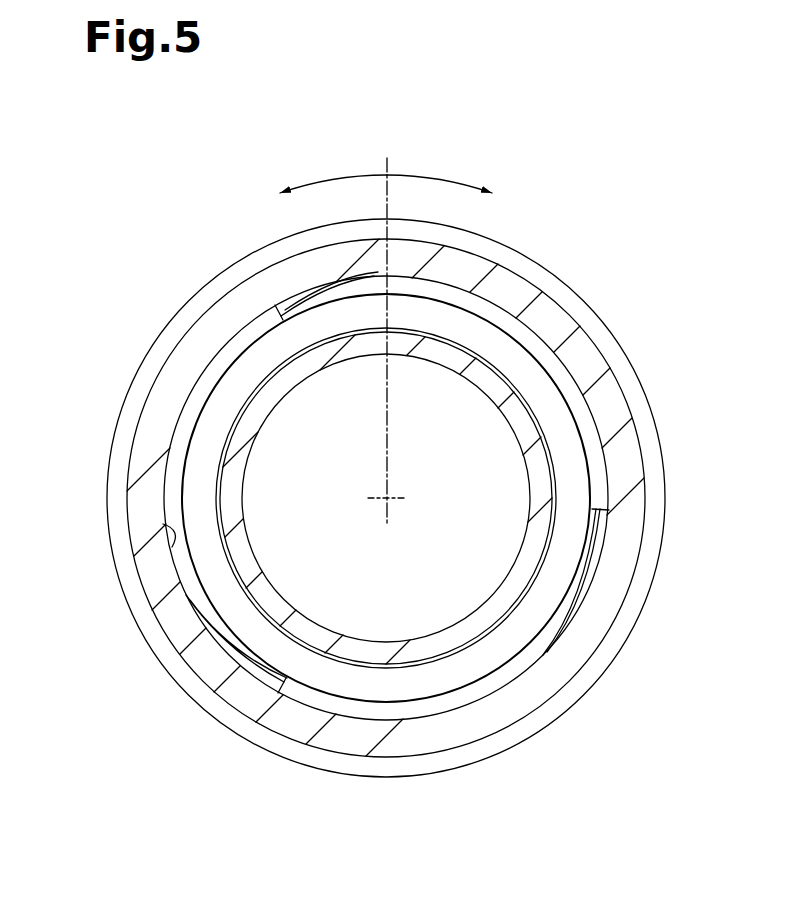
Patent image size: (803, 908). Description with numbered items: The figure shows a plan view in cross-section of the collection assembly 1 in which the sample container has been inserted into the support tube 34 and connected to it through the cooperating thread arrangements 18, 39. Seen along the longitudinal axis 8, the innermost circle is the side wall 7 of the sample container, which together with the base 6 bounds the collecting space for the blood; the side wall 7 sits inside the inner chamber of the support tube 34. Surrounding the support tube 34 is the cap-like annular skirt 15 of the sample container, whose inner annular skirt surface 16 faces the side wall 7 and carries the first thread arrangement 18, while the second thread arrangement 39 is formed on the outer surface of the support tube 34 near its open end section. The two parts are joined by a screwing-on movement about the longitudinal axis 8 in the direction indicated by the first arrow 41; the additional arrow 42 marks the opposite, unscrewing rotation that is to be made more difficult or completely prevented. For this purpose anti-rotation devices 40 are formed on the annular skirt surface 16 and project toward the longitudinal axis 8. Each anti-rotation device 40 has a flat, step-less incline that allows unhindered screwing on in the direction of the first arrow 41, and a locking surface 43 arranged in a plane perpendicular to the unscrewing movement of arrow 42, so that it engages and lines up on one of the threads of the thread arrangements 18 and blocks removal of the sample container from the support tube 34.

The collection assembly 1 is at (607, 149).
The base 6 is at (467, 590).
The side wall 7 is at (542, 481).
The longitudinal axis 8 is at (386, 502).
The annular skirt 15 is at (610, 405).
The inner annular skirt surface 16 is at (168, 538).
The first thread arrangement 18 is at (556, 365).
The support tube 34 is at (472, 332).
The second thread arrangement 39 is at (392, 573).
The anti-rotation device 40 is at (296, 304).
The first arrow 41 is at (425, 176).
The arrow 42 is at (348, 176).
The locking surface 43 is at (283, 314).